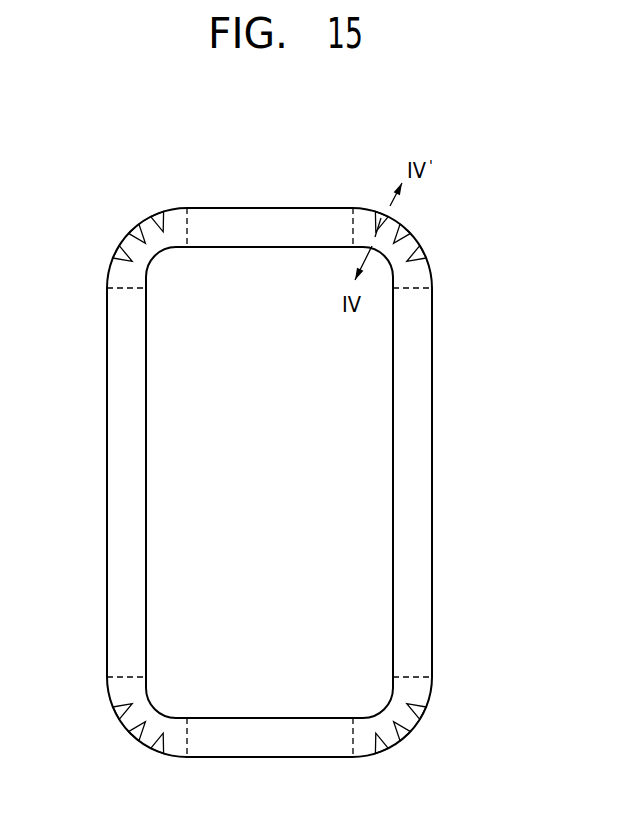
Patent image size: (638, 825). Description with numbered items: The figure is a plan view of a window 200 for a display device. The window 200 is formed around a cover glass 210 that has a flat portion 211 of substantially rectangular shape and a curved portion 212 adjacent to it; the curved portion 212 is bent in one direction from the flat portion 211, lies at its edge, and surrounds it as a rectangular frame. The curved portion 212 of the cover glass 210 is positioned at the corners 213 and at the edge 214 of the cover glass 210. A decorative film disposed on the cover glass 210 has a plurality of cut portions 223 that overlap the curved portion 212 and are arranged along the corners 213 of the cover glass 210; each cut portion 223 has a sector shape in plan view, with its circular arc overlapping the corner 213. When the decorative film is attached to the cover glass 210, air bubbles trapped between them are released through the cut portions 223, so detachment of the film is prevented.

The window 200 is at (145, 138).
The cover glass 210 is at (269, 414).
The flat portion 211 is at (220, 267).
The curved portion 212 is at (272, 218).
The corner 213 is at (130, 207).
The edge 214 is at (442, 448).
The cut portion 223 is at (409, 225).